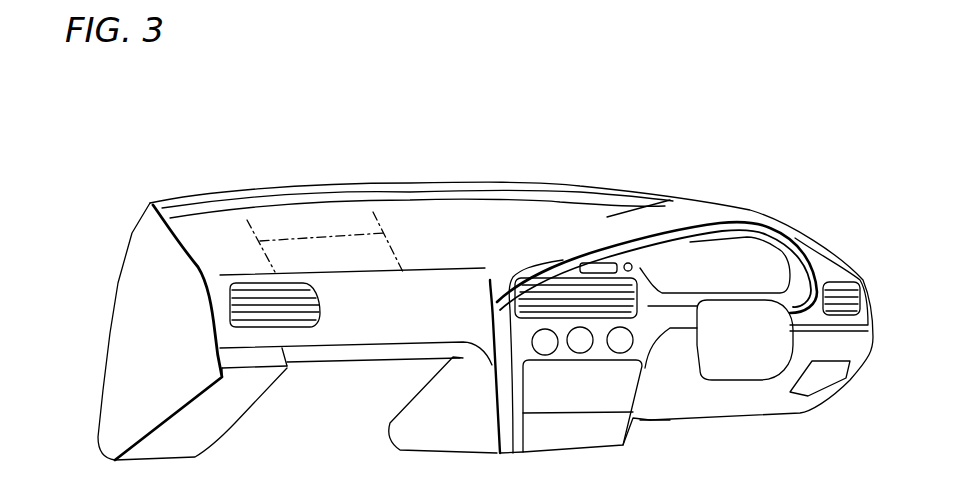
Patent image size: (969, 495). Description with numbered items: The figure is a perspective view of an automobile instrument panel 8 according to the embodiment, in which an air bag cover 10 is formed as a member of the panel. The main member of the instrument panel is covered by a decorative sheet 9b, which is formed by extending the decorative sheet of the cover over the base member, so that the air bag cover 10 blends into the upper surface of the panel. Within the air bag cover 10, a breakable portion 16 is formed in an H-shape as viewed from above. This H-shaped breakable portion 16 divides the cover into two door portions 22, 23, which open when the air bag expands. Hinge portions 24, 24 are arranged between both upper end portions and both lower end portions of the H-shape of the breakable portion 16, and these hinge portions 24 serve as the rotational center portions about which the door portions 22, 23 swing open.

The instrument panel 8 is at (700, 192).
The decorative sheet 9b is at (543, 213).
The air bag cover 10 is at (367, 219).
The breakable portion 16 is at (390, 222).
The door portion 22 is at (353, 253).
The door portion 23 is at (330, 230).
The hinge portion 24 is at (290, 217).